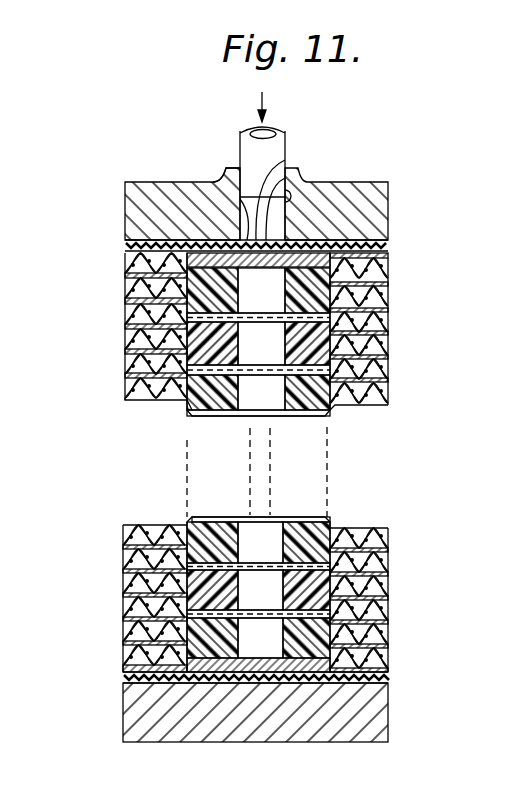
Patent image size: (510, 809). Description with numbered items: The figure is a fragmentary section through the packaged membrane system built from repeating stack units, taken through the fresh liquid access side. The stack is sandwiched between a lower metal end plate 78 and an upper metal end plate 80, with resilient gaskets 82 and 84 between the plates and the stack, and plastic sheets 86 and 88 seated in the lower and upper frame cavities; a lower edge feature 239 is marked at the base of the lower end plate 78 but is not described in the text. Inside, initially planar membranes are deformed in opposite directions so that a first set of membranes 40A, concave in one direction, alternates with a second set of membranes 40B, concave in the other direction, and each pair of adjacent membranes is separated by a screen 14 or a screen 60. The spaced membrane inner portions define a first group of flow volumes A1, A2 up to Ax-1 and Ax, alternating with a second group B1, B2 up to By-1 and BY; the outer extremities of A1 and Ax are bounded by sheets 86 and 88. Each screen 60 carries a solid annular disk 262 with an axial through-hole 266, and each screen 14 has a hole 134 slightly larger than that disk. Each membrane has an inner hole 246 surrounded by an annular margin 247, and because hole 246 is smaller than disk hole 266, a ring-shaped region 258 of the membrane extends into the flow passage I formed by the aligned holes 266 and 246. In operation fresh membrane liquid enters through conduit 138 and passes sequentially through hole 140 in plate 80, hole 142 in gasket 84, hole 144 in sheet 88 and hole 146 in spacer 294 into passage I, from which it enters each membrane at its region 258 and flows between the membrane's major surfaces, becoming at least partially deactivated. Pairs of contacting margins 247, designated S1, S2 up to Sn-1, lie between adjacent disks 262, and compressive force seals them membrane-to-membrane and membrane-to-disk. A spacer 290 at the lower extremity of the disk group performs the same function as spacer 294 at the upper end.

The separator screen 14 is at (125, 256).
The first set of membranes 40A is at (125, 300).
The second set of membranes 40B is at (125, 266).
The separator screen 60 is at (125, 292).
The end plate 78 is at (385, 723).
The end plate 80 is at (360, 205).
The gasket 82 is at (123, 684).
The gasket 84 is at (388, 243).
The sheet 86 is at (392, 681).
The sheet 88 is at (390, 251).
The hole 134 is at (178, 224).
The conduit 138 is at (282, 133).
The hole 140 is at (294, 196).
The hole 142 is at (289, 175).
The hole 144 is at (218, 177).
The hole 146 is at (287, 162).
The bottom edge of base 239 is at (322, 741).
The membrane inner through-hole 246 is at (267, 558).
The annular membrane margin 247 is at (305, 418).
The ring-shaped membrane region 258 is at (266, 376).
The solid annular disk 262 is at (200, 518).
The disk through-hole 266 is at (279, 354).
The spacer 290 is at (222, 684).
The spacer 294 is at (192, 232).
The flow volume Ax is at (392, 270).
The flow volume BY is at (392, 294).
The flow volume Ax-1 is at (392, 322).
The flow volume By-1 is at (392, 345).
The flow volume A1 is at (392, 657).
The flow volume A2 is at (392, 606).
The flow volume B1 is at (392, 632).
The flow volume B2 is at (392, 582).
The fresh membrane liquid access flow passage I is at (278, 310).
The pair of contacting membrane margins S1 is at (260, 638).
The pair of contacting membrane margins S2 is at (270, 516).
The pair of contacting membrane margins Sn-1 is at (263, 396).